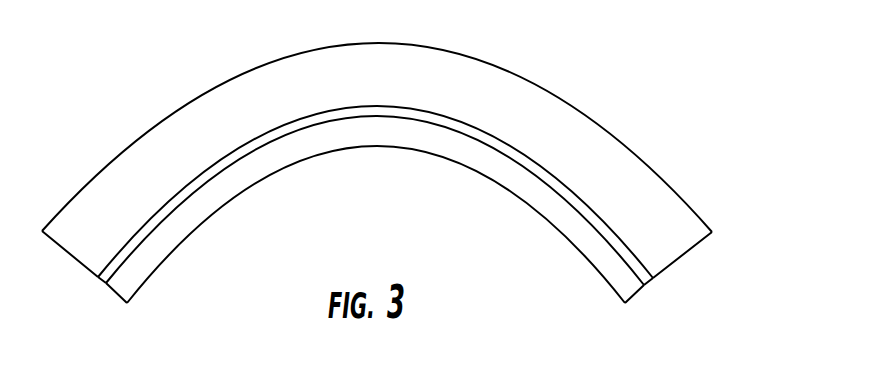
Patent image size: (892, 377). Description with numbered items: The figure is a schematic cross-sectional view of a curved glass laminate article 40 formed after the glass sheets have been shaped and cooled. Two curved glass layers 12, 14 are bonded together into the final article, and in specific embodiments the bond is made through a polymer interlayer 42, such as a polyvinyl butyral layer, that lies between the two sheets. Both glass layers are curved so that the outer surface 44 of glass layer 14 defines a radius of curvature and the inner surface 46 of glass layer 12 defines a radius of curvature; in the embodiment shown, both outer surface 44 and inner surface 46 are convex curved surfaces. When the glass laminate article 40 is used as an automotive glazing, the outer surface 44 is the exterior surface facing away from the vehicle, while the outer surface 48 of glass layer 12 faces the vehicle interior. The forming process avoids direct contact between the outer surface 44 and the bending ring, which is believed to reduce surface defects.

The curved glass laminate article 40 is at (768, 172).
The outer surface 44 is at (249, 65).
The glass layer 14 is at (683, 217).
The inner surface 46 is at (460, 133).
The polymer interlayer 42 is at (651, 278).
The glass layer 12 is at (628, 284).
The outer surface 48 is at (558, 230).